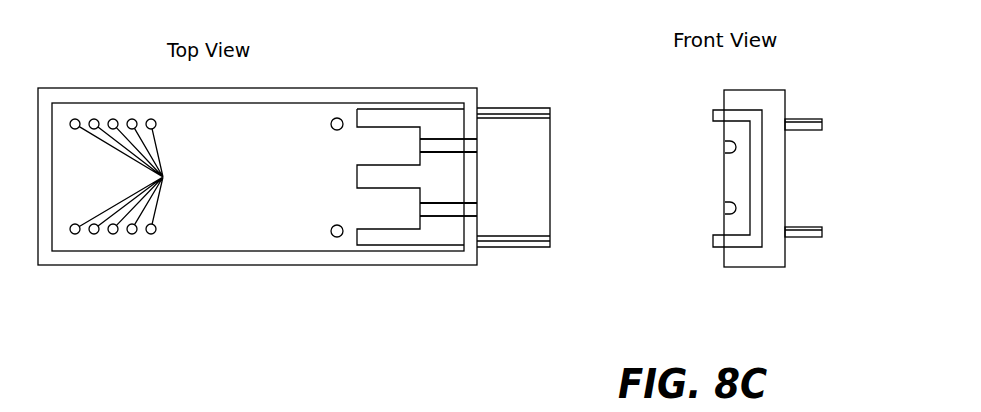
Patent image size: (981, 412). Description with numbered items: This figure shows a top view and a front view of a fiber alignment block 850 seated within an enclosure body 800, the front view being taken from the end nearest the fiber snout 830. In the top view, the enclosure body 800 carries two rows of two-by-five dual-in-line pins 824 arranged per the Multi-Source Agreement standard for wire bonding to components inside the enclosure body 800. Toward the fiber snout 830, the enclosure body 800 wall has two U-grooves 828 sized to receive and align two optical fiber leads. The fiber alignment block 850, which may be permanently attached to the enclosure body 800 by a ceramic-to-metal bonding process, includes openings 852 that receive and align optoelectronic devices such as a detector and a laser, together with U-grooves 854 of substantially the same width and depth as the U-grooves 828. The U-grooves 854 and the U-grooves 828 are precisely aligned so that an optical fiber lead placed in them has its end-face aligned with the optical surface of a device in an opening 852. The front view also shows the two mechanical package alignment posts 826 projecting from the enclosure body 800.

The enclosure body 800 is at (105, 87).
The dual-in-line pins 824 is at (168, 177).
The mechanical package alignment posts 826 is at (812, 118).
The U-grooves 828 is at (466, 209).
The fiber snout 830 is at (535, 247).
The fiber alignment block 850 is at (443, 117).
The opening 852 is at (363, 209).
The U-groove 854 is at (438, 145).